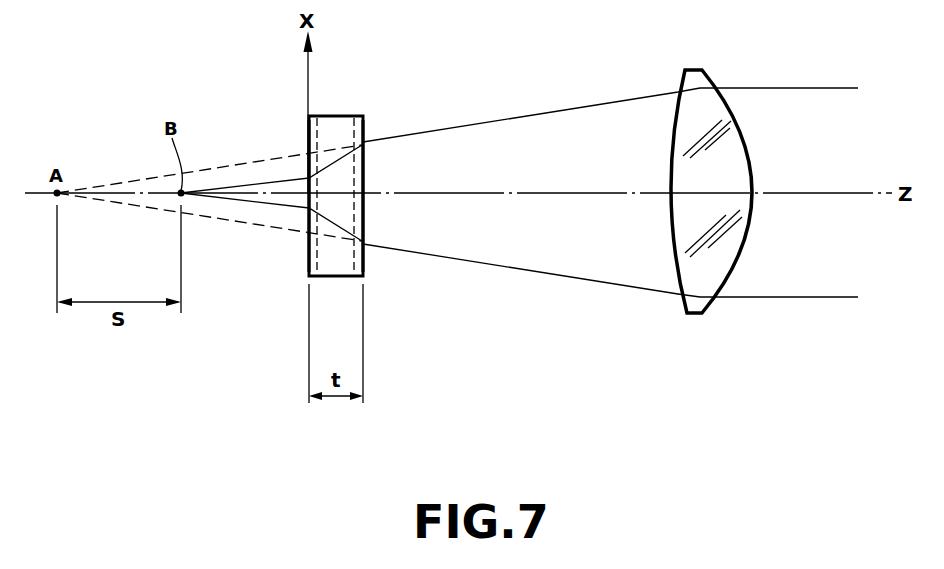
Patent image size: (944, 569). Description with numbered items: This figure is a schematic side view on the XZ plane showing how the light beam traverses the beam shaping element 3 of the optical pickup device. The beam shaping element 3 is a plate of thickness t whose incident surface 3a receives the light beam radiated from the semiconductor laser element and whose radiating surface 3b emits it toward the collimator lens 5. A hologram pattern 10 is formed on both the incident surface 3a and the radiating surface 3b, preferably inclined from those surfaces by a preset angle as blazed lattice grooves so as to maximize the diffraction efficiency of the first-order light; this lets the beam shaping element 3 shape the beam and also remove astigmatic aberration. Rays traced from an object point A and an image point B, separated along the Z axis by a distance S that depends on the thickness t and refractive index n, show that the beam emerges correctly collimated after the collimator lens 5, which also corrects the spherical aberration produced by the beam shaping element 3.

The beam shaping element 3 is at (335, 118).
The incident surface 3a is at (309, 266).
The radiating surface 3b is at (363, 266).
The collimator lens 5 is at (705, 80).
The hologram pattern 10 is at (309, 135).